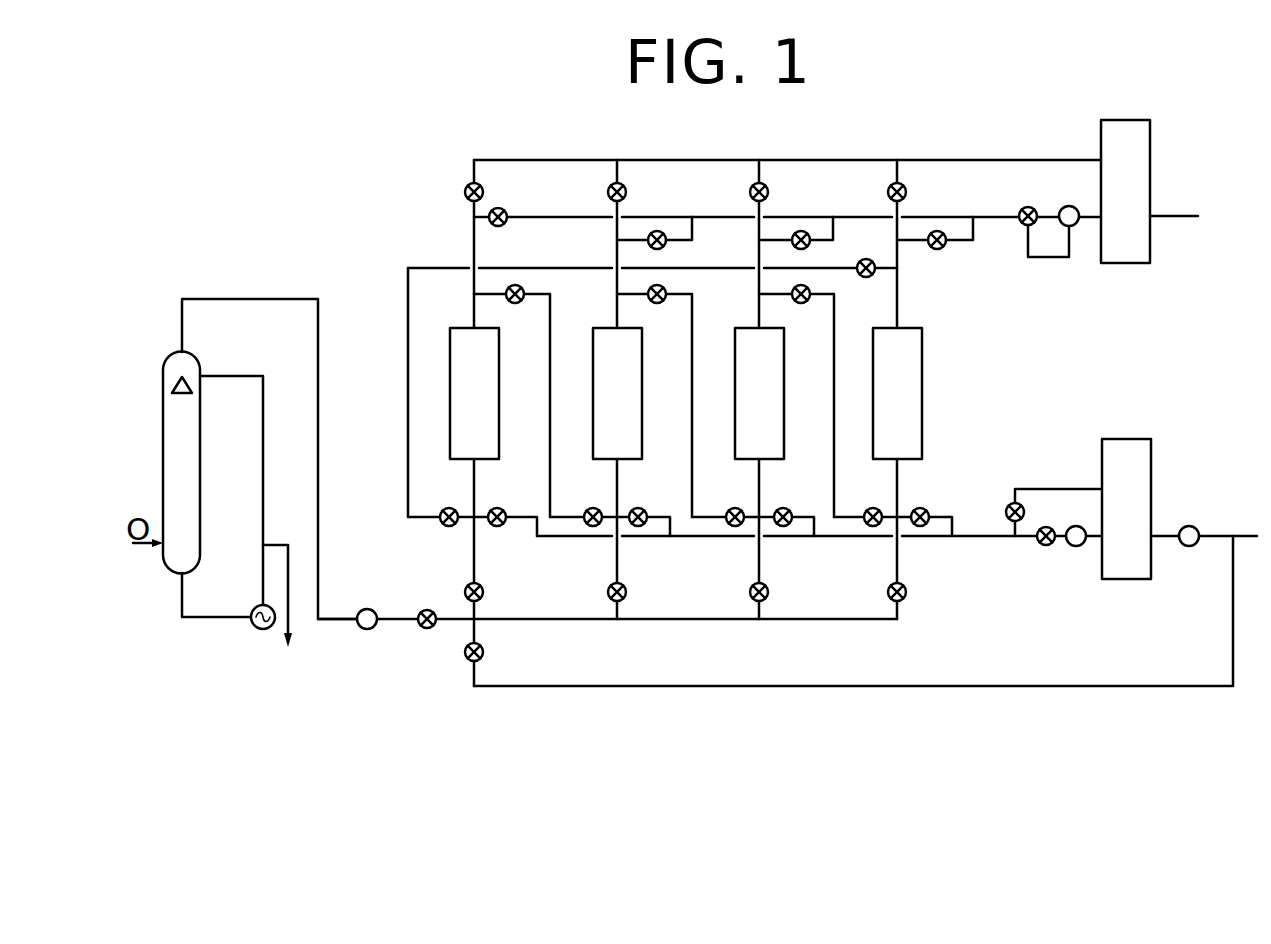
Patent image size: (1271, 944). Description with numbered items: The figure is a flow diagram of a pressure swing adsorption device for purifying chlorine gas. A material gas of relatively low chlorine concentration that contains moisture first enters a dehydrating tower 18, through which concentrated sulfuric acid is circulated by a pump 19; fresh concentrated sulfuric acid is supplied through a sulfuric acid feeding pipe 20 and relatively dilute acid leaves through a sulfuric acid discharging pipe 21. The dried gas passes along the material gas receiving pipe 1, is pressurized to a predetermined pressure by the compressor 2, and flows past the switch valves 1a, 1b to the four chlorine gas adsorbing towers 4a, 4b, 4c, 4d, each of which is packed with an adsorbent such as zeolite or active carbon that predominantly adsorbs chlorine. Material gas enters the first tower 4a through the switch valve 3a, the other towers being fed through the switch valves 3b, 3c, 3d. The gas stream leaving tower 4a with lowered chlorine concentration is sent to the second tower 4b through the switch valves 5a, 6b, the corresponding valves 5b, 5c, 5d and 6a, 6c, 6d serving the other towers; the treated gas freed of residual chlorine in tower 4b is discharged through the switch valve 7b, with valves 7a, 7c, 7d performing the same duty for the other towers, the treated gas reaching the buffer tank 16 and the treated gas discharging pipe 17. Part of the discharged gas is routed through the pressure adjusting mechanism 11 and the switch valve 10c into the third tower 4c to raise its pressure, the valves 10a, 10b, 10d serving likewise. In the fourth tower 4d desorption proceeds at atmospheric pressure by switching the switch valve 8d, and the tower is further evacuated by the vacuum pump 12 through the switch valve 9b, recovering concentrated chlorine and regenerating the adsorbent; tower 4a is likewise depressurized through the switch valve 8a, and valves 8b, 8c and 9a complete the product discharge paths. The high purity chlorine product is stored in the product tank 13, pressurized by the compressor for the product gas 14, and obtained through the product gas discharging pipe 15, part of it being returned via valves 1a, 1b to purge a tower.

The material gas receiving pipe 1 is at (245, 300).
The switch valve 1a is at (427, 609).
The switch valve 1b is at (483, 655).
The compressor for a material gas 2 is at (368, 630).
The switch valve for receiving the material gas 3a is at (483, 587).
The switch valve for receiving the material gas 3b is at (627, 590).
The switch valve for receiving the material gas 3c is at (769, 588).
The switch valve for receiving the material gas 3d is at (906, 588).
The chlorine gas adsorbing tower 4a is at (500, 413).
The chlorine gas adsorbing tower 4b is at (643, 413).
The chlorine gas adsorbing tower 4c is at (785, 413).
The chlorine gas adsorbing tower 4d is at (923, 410).
The switch valve for discharging a treated gas 5a is at (517, 304).
The switch valve for discharging a treated gas 5b is at (659, 304).
The switch valve for discharging a treated gas 5c is at (803, 304).
The switch valve for discharging a treated gas 5d is at (866, 278).
The switch valve for receiving the treated gas 6a is at (443, 509).
The switch valve for receiving the treated gas 6b is at (586, 509).
The switch valve for receiving the treated gas 6c is at (727, 509).
The switch valve for receiving the treated gas 6d is at (866, 509).
The switch valve for discharging the treated gas 7a is at (465, 190).
The switch valve for discharging the treated gas 7b is at (608, 191).
The switch valve for discharging the treated gas 7c is at (750, 191).
The switch valve for discharging the treated gas 7d is at (888, 191).
The switch valve for discharging a product gas 8a is at (503, 510).
The switch valve for discharging a product gas 8b is at (645, 510).
The switch valve for discharging a product gas 8c is at (790, 510).
The switch valve for discharging a product gas 8d is at (927, 510).
The switch valve for discharging the product gas 9a is at (1008, 506).
The switch valve for discharging the product gas 9b is at (1040, 549).
The switch valve for receiving a pressurized gas 10a is at (505, 225).
The switch valve for receiving a pressurized gas 10b is at (666, 248).
The switch valve for receiving a pressurized gas 10c is at (810, 248).
The switch valve for receiving a pressurized gas 10d is at (946, 248).
The pressure adjusting mechanism 11 is at (1048, 201).
The vacuum pump 12 is at (1073, 549).
The product tank 13 is at (1102, 470).
The compressor for the product gas 14 is at (1187, 526).
The product gas discharging pipe 15 is at (1248, 531).
The buffer tank 16 is at (1101, 129).
The treated gas discharging pipe 17 is at (1183, 210).
The dehydrating tower 18 is at (202, 430).
The pump 19 is at (262, 630).
The sulfuric acid feeding pipe 20 is at (234, 366).
The sulfuric acid discharging pipe 21 is at (289, 618).